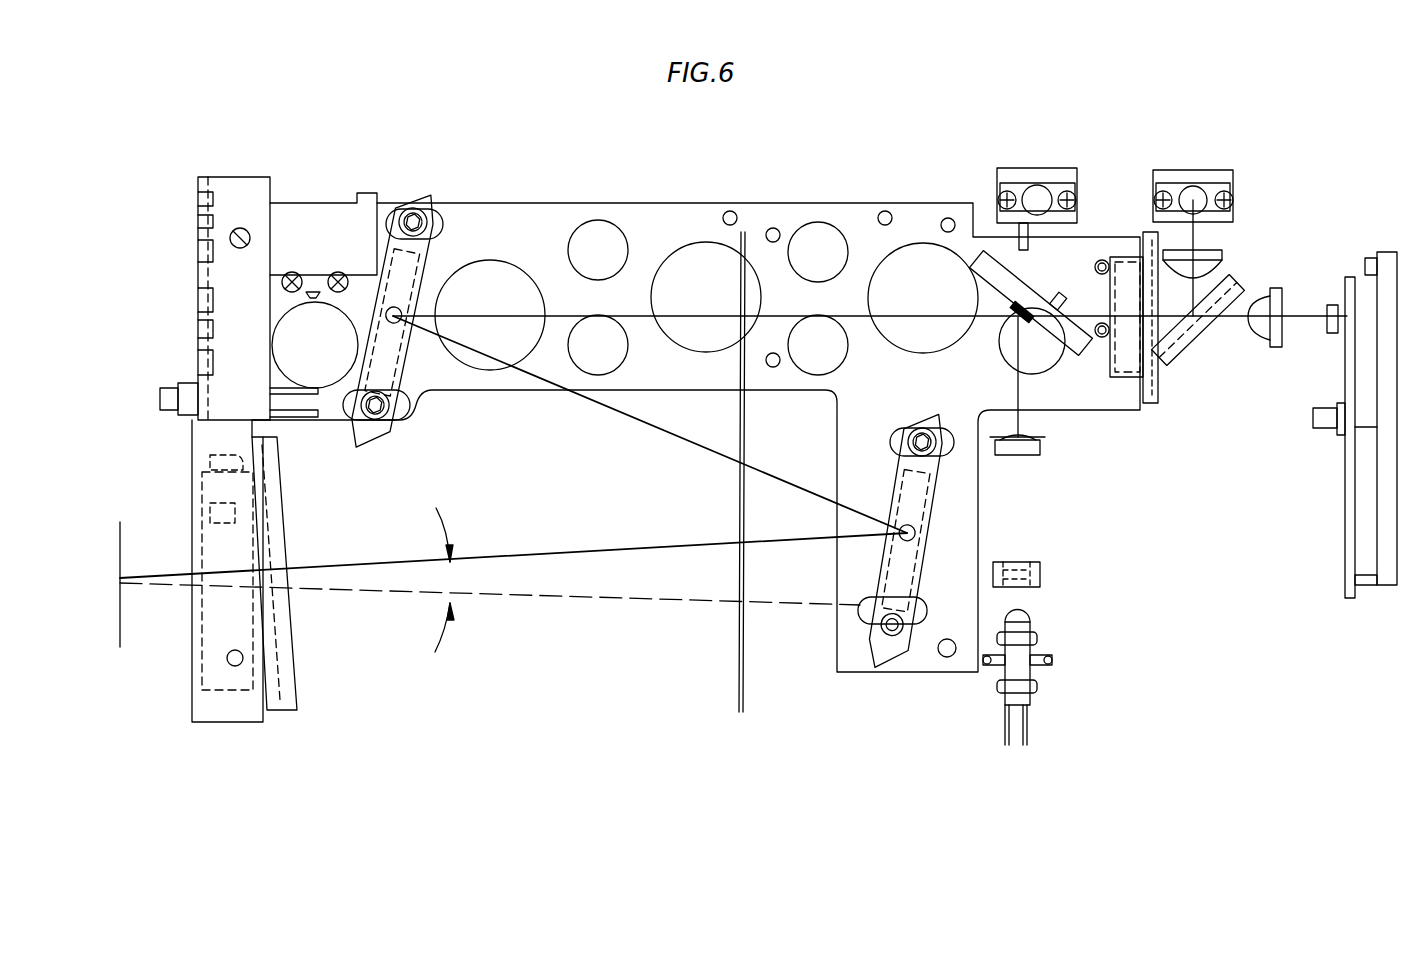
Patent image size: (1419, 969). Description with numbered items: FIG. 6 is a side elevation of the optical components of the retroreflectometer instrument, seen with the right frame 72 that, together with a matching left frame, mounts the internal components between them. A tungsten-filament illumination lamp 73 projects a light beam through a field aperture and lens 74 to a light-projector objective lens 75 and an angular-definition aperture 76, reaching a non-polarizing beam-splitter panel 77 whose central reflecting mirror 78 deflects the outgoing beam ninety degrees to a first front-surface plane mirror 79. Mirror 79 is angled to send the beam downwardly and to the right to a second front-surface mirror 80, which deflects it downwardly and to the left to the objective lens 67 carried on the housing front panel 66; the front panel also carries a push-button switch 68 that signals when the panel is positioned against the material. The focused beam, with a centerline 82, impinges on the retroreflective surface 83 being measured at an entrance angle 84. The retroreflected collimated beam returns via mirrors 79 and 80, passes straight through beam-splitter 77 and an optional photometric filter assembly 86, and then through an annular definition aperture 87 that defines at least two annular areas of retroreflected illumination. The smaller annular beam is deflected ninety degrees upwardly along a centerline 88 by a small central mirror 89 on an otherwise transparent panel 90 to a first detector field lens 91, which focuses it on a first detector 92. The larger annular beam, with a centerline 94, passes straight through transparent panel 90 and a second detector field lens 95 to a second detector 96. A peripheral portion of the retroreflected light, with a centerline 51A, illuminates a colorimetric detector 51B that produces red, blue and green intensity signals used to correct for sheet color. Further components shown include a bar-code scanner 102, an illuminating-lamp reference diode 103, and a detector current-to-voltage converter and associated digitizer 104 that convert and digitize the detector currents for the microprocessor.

The centerline of peripheral retroreflected light 51A is at (705, 605).
The colorimetric detector 51B is at (870, 605).
The housing front panel 66 is at (198, 228).
The objective lens 67 is at (285, 519).
The push-button switch 68 is at (172, 393).
The right frame 72 is at (735, 203).
The illumination lamp 73 is at (1035, 618).
The lens 74 is at (1040, 572).
The light-projector objective lens 75 is at (1045, 450).
The angular-definition aperture 76 is at (1043, 430).
The non-polarizing beam-splitter panel 77 is at (1025, 272).
The central reflecting mirror 78 is at (1007, 317).
The first front-surface plane mirror 79 is at (430, 232).
The second front-surface mirror 80 is at (900, 510).
The centerline of focused light beam 82 is at (707, 316).
The retroreflective surface 83 is at (122, 608).
The entrance angle 84 is at (443, 520).
The photometric filter assembly 86 is at (1130, 272).
The annular definition aperture 87 is at (1158, 375).
The centerline of smaller annular beam 88 is at (1210, 275).
The small central mirror 89 is at (1200, 322).
The transparent panel 90 is at (1237, 283).
The first detector field lens 91 is at (1220, 236).
The first detector 92 is at (1237, 176).
The centerline of larger annular beam 94 is at (1307, 320).
The second detector field lens 95 is at (1273, 350).
The second detector 96 is at (1332, 305).
The bar-code scanner 102 is at (310, 215).
The illuminating-lamp reference diode 103 is at (1012, 185).
The detector current-to-voltage converter and associated digitizer 104 is at (1345, 485).